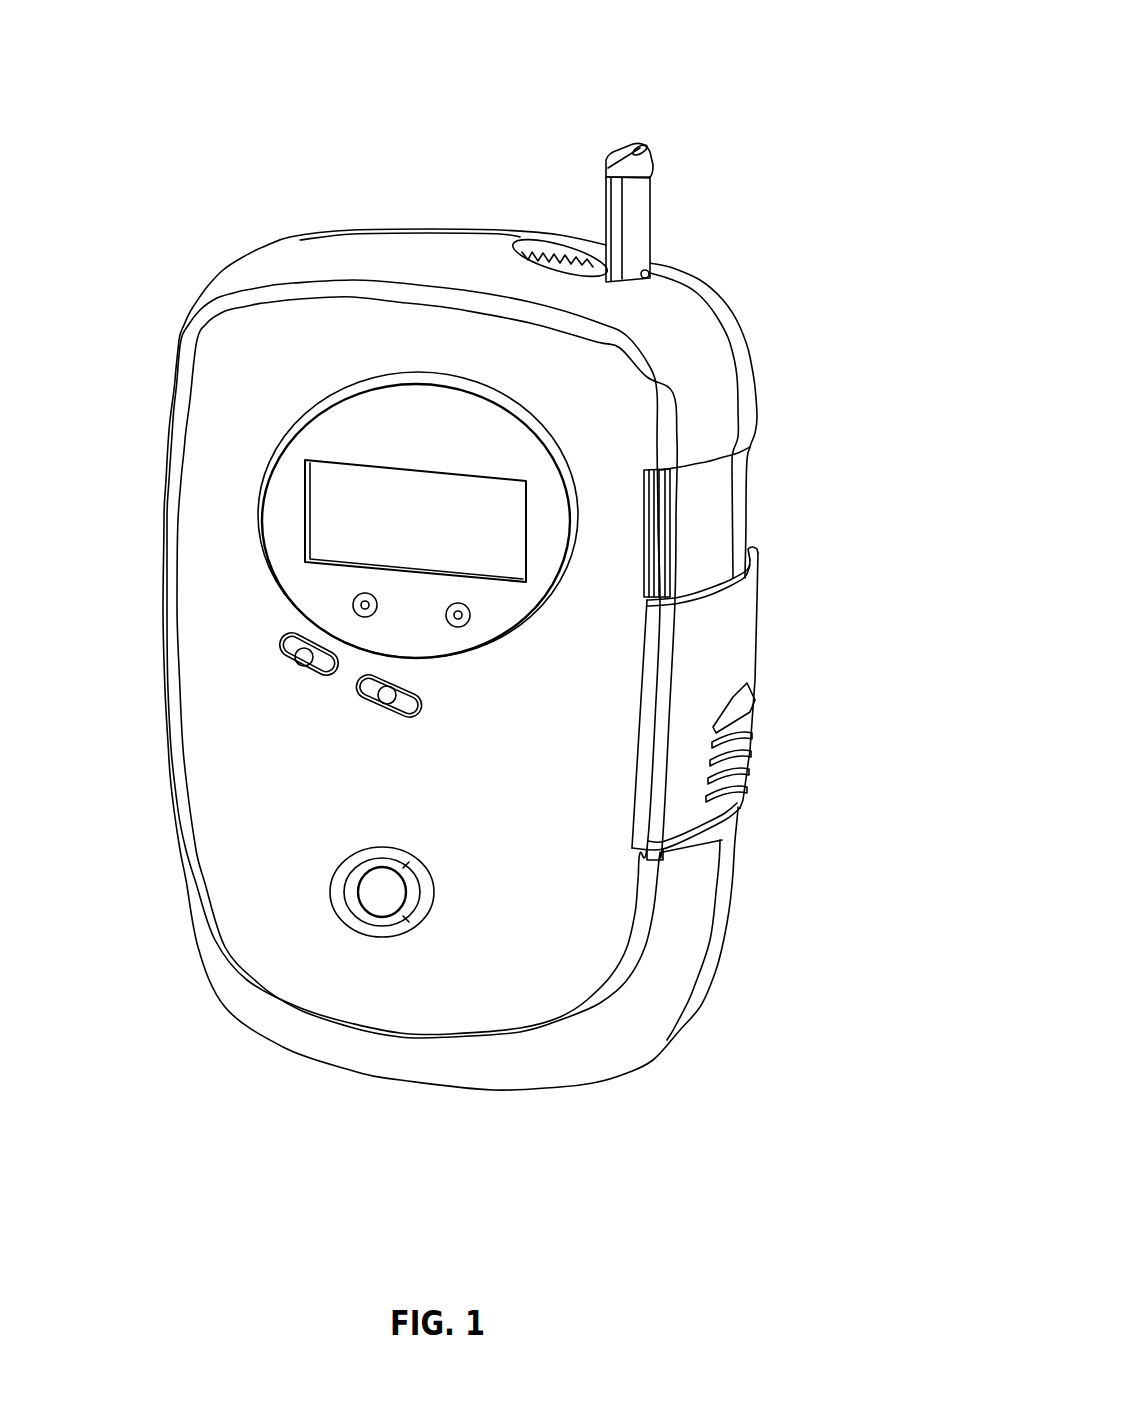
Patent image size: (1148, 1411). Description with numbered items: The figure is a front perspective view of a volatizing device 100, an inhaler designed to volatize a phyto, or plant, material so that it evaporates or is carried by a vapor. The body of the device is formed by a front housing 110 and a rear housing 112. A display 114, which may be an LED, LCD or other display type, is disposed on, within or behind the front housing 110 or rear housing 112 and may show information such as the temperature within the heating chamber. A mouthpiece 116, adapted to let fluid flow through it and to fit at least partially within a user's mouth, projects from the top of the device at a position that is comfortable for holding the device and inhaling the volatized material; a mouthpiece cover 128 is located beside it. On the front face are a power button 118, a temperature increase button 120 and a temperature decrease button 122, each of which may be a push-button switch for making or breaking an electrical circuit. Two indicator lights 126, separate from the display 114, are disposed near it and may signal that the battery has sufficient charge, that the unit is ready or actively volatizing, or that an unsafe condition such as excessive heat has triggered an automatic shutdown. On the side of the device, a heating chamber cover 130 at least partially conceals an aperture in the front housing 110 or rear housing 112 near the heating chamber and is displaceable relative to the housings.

The volatizing device 100 is at (762, 133).
The front housing 110 is at (352, 310).
The rear housing 112 is at (738, 360).
The display 114 is at (323, 500).
The mouthpiece 116 is at (640, 203).
The power button 118 is at (373, 898).
The temperature increase button 120 is at (303, 660).
The temperature decrease button 122 is at (382, 704).
The indicator lights 126 is at (455, 613).
The mouthpiece cover 128 is at (527, 242).
The heating chamber cover 130 is at (740, 637).